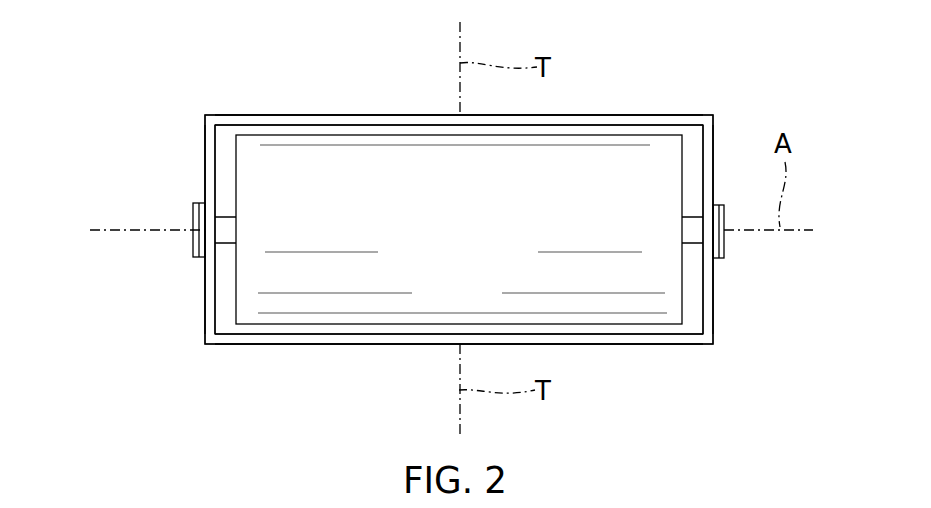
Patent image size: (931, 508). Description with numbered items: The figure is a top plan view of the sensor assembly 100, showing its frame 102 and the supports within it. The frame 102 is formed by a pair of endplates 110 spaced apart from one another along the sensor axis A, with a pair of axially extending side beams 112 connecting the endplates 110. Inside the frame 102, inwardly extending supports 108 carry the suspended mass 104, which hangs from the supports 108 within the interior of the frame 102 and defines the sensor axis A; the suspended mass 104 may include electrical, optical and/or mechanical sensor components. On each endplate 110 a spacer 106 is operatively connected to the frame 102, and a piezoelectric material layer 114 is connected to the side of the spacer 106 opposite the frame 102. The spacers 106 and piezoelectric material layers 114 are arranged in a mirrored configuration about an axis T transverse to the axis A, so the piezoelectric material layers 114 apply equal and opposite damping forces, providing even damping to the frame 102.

The sensor assembly 100 is at (186, 78).
The frame 102 is at (720, 115).
The suspended mass 104 is at (404, 165).
The spacer 106 is at (196, 202).
The supports 108 is at (244, 230).
The endplates 110 is at (205, 291).
The side beams 112 is at (633, 115).
The piezoelectric material layer 114 is at (193, 213).